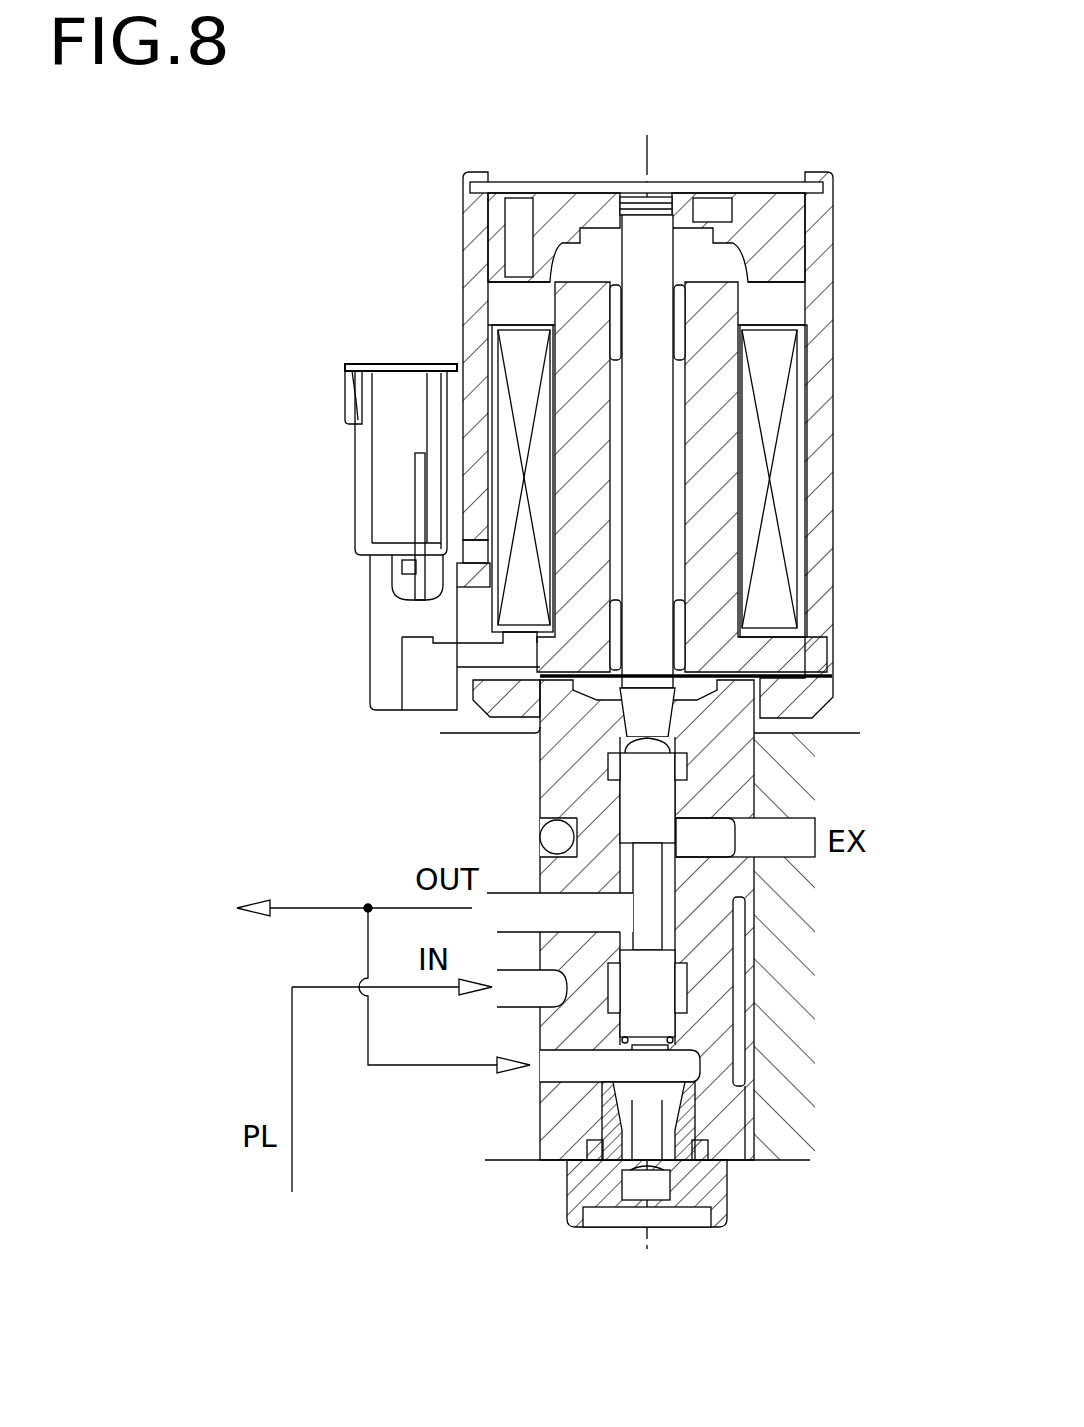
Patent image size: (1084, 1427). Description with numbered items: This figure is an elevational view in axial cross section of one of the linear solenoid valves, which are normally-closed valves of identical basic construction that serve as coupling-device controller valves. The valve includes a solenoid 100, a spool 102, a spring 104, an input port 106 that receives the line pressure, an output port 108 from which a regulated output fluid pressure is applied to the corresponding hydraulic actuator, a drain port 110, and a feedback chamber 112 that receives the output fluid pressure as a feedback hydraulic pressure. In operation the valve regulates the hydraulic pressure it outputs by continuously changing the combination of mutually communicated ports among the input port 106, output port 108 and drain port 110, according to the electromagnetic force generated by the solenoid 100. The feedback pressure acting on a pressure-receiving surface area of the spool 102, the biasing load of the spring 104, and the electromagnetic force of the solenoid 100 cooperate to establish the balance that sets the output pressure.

The solenoid 100 is at (783, 467).
The spool 102 is at (658, 993).
The spring 104 is at (617, 1203).
The input port 106 is at (520, 1007).
The output port 108 is at (510, 895).
The drain port 110 is at (780, 822).
The feedback chamber 112 is at (692, 1067).